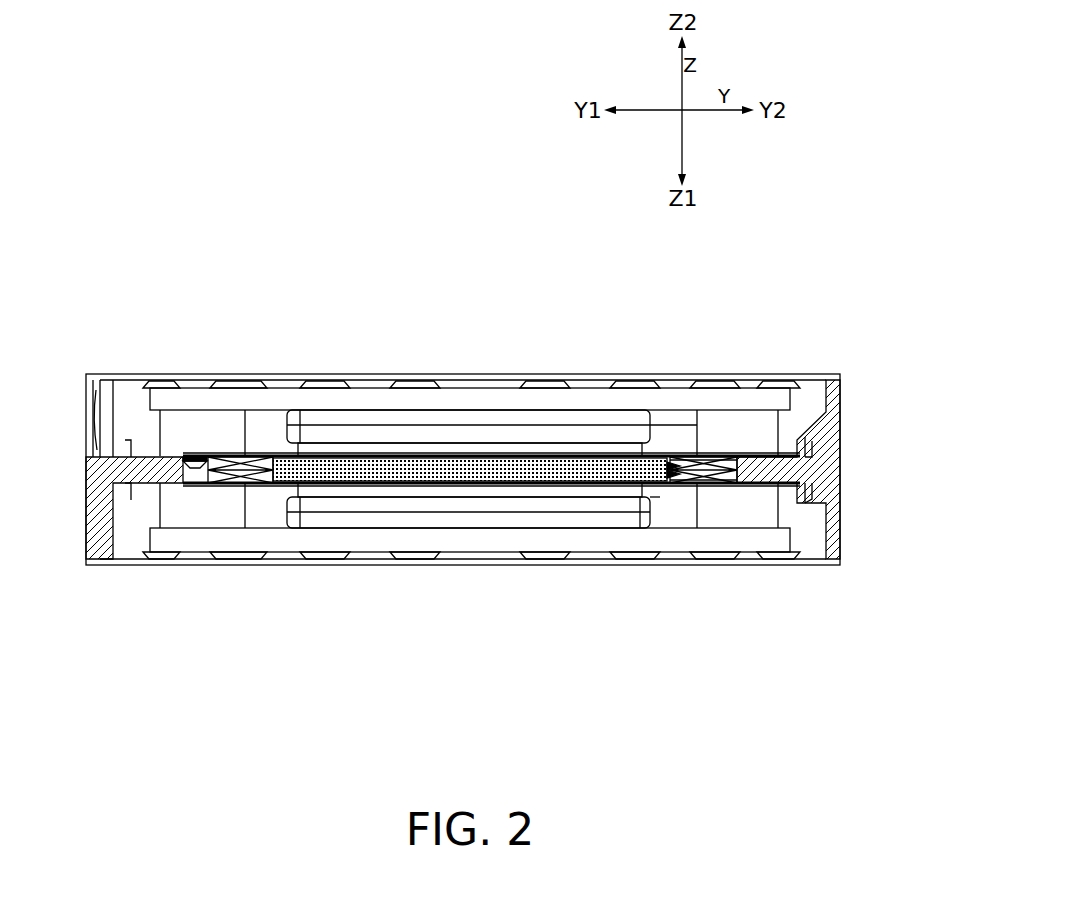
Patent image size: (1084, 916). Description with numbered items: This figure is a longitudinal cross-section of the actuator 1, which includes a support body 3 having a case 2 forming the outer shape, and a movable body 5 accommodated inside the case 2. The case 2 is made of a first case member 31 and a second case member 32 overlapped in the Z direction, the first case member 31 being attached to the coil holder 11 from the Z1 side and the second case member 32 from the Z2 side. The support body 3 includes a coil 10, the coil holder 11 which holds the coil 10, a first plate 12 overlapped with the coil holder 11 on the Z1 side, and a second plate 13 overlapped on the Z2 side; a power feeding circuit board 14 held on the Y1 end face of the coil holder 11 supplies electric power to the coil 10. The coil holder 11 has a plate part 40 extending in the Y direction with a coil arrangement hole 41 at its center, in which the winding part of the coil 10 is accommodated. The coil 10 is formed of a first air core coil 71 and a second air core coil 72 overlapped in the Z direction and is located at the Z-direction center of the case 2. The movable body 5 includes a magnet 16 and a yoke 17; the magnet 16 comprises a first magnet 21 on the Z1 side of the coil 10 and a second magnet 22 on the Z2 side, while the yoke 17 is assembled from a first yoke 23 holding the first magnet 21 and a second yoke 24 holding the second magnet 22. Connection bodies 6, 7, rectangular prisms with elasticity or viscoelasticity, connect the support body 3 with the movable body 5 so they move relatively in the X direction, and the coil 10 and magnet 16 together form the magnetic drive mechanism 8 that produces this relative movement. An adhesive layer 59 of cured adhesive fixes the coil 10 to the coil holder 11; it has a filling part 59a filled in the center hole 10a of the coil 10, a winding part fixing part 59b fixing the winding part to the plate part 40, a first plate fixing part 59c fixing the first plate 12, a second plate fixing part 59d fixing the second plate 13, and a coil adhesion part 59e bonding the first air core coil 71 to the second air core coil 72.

The actuator 1 is at (146, 296).
The support body 3 is at (282, 233).
The power feeding circuit board 14 is at (113, 378).
The case 2 is at (330, 265).
The second case member 32 is at (265, 376).
The first case member 31 is at (371, 398).
The first plate 12 is at (402, 453).
The second plate 13 is at (440, 457).
The coil 10 is at (590, 265).
The first air core coil 71 is at (672, 470).
The second air core coil 72 is at (700, 470).
The coil holder 11 is at (812, 416).
The connection body 7 is at (208, 435).
The second plate fixing part 59d is at (767, 467).
The first plate fixing part 59c is at (783, 473).
The plate part 40 is at (155, 473).
The coil arrangement hole 41 is at (212, 462).
The connection body 6 is at (217, 507).
The magnetic drive mechanism 8 is at (281, 490).
The first yoke 23 is at (328, 540).
The second yoke 24 is at (370, 507).
The first magnet 21 is at (437, 512).
The second magnet 22 is at (478, 430).
The yoke 17 is at (395, 650).
The magnet 16 is at (498, 650).
The movable body 5 is at (478, 689).
The adhesive layer 59 is at (528, 478).
The filling part 59a is at (565, 473).
The center hole 10a is at (645, 498).
The coil adhesion part 59e is at (703, 470).
The winding part fixing part 59b is at (728, 467).